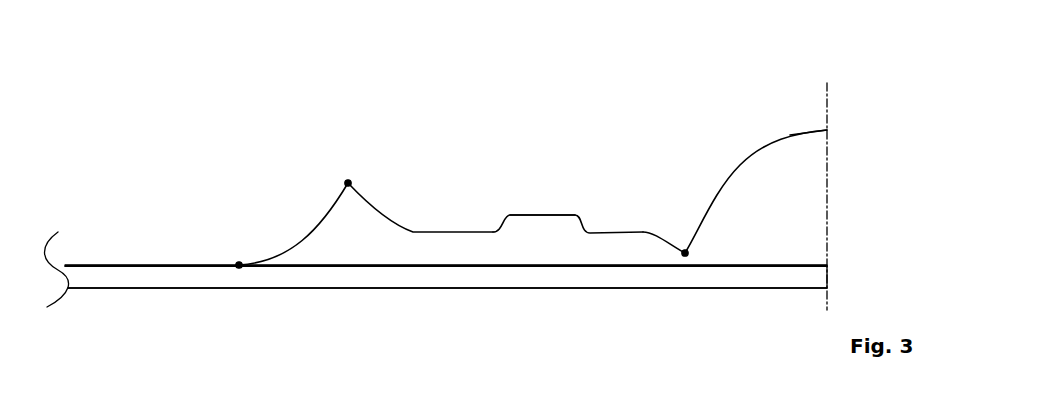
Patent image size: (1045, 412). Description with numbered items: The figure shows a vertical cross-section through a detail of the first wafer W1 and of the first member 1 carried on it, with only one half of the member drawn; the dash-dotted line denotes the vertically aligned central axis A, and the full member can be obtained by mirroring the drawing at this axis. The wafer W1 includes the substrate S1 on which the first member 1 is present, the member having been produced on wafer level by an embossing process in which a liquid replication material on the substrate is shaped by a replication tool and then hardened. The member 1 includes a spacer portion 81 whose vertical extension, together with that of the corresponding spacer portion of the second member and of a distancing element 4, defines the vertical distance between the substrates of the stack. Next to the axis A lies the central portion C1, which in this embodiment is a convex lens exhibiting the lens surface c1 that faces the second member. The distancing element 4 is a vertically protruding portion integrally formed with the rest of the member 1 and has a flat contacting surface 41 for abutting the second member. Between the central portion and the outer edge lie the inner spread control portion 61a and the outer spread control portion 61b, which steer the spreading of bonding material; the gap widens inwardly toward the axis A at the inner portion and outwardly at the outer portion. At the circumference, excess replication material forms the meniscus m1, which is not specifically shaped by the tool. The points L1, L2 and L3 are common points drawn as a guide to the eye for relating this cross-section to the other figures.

The first wafer W1 is at (100, 147).
The first member 1 is at (427, 243).
The spacer portion 81 is at (460, 243).
The substrate S1 is at (783, 280).
The meniscus m1 is at (317, 233).
The outer spread control portion 61b is at (370, 200).
The distancing element 4 is at (545, 220).
The flat contacting surface 41 is at (533, 215).
The inner spread control portion 61a is at (685, 252).
The lens surface c1 is at (757, 153).
The central axis A is at (827, 103).
The central portion C1 is at (800, 195).
The common point L1 is at (239, 265).
The common point L2 is at (348, 183).
The common point L3 is at (685, 253).